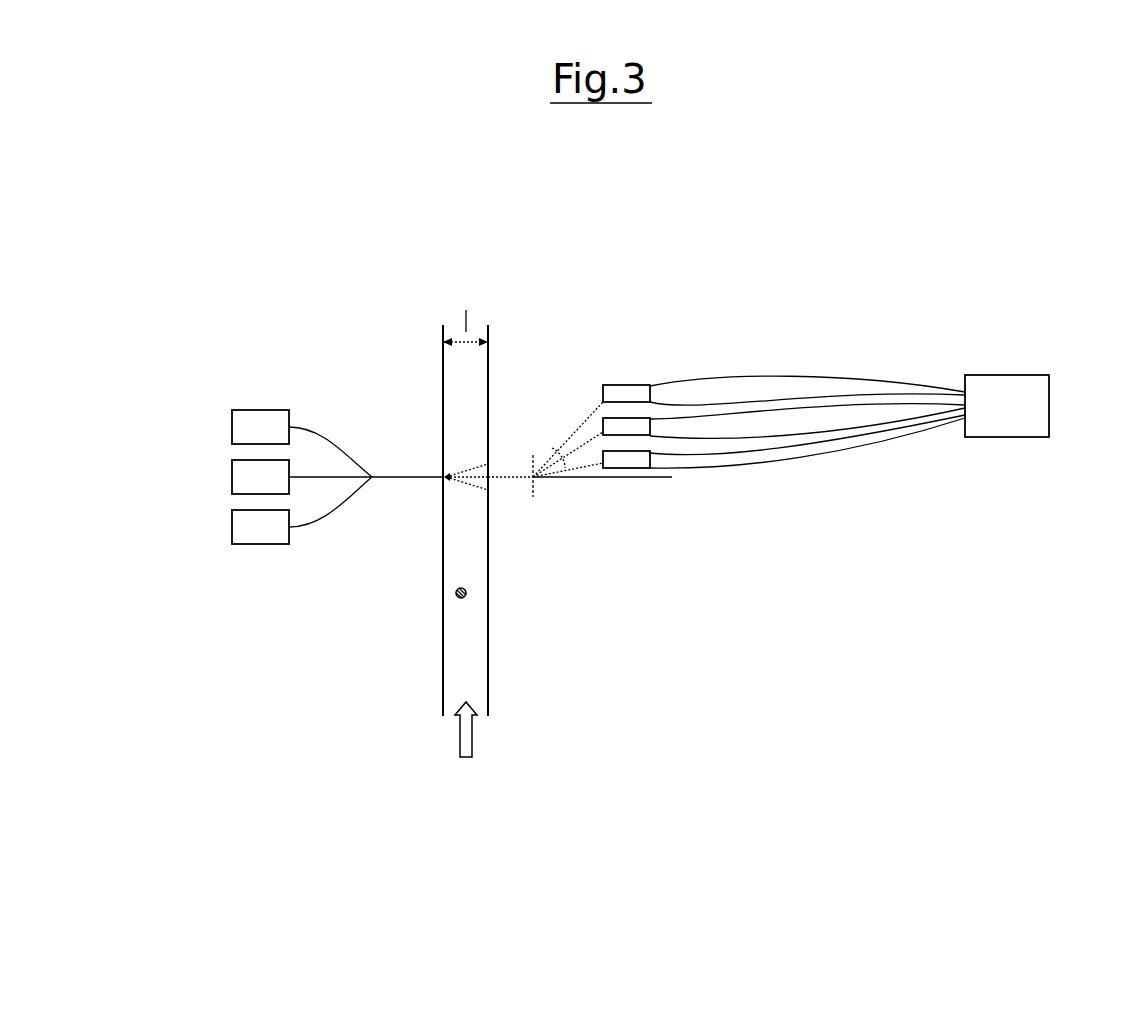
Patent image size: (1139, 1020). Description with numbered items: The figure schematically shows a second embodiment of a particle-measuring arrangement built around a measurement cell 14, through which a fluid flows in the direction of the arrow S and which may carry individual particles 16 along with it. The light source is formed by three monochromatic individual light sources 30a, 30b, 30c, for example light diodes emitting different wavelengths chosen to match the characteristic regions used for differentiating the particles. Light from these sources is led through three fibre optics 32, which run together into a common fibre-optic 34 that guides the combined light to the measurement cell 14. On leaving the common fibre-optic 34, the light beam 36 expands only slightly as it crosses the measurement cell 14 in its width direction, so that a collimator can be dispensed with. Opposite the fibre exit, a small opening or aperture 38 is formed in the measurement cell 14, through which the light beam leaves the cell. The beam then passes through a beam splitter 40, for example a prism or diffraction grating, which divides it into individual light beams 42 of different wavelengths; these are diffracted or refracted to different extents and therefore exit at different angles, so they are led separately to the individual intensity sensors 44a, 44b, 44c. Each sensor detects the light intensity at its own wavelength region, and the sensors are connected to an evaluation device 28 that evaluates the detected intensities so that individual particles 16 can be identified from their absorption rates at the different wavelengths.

The measurement cell 14 is at (488, 683).
The particles 16 is at (470, 599).
The evaluation device 28 is at (1017, 425).
The monochromatic individual light source 30a is at (252, 400).
The monochromatic individual light source 30b is at (231, 480).
The monochromatic individual light source 30c is at (273, 550).
The fibre optics 32 is at (315, 422).
The common fibre-optic 34 is at (395, 478).
The light beam 36 is at (468, 460).
The aperture 38 is at (495, 467).
The beam splitter 40 is at (534, 500).
The individual light beams 42 is at (585, 442).
The intensity sensor 44a is at (655, 387).
The intensity sensor 44b is at (655, 428).
The intensity sensor 44c is at (656, 470).
The flow direction S is at (457, 748).